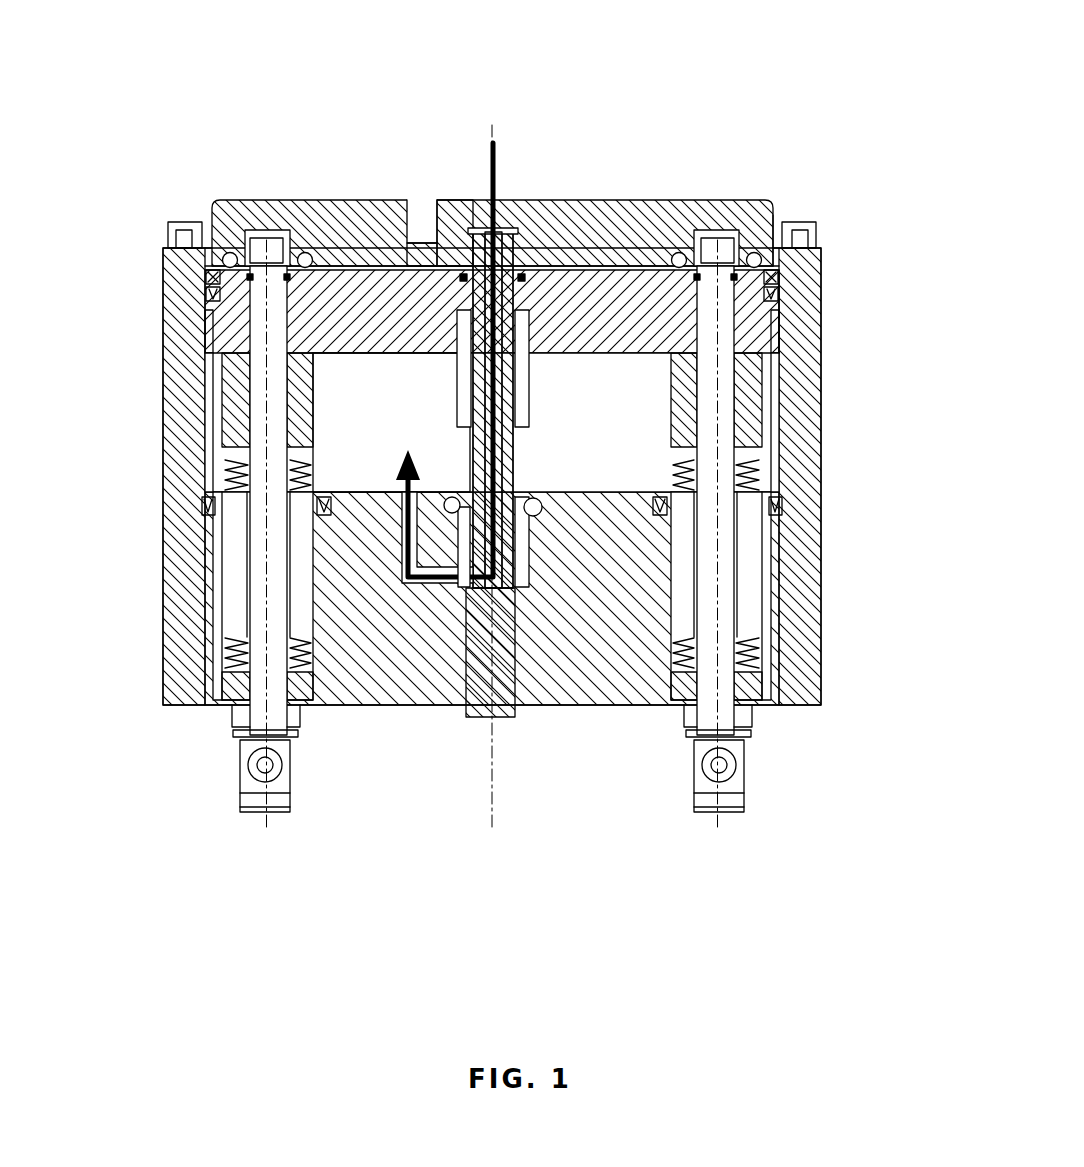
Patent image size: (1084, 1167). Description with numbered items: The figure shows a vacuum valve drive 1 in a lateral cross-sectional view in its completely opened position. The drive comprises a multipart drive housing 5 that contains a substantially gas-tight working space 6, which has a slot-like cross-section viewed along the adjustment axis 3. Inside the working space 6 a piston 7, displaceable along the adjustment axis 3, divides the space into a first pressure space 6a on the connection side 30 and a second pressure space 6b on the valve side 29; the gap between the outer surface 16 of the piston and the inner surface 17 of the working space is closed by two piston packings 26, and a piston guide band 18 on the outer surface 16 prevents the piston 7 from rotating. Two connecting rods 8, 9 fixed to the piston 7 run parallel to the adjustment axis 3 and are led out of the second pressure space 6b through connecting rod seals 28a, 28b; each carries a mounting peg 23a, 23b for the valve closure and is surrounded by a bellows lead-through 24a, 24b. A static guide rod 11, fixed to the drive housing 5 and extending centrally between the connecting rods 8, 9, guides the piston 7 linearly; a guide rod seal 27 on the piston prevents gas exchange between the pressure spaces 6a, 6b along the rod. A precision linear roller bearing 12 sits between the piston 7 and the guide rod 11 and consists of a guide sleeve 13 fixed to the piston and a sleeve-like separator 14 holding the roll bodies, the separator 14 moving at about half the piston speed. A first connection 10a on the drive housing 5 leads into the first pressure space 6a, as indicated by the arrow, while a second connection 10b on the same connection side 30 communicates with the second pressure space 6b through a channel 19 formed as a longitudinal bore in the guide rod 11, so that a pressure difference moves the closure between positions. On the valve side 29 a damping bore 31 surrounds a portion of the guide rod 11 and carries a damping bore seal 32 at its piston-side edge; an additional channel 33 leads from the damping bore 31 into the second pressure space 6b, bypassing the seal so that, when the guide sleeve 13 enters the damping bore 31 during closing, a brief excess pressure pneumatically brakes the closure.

The vacuum valve drive 1 is at (136, 117).
The adjustment axis 3 is at (490, 802).
The drive housing 5 is at (258, 212).
The working space 6 is at (337, 418).
The first pressure space 6a is at (770, 268).
The second pressure space 6b is at (350, 445).
The piston 7 is at (353, 307).
The connecting rod 8 is at (258, 452).
The connecting rod 9 is at (727, 452).
The first connection 10a is at (420, 212).
The second connection 10b is at (483, 212).
The guide rod 11 is at (505, 360).
The precision linear roller bearing 12 is at (548, 405).
The guide sleeve 13 is at (523, 385).
The separator 14 is at (515, 373).
The outer surface of the piston 16 is at (778, 343).
The inner surface of the working space 17 is at (782, 363).
The piston guide band 18 is at (790, 325).
The channel 19 is at (497, 438).
The mounting peg 23a is at (250, 787).
The mounting peg 23b is at (733, 787).
The bellows lead-through 24a is at (240, 478).
The bellows lead-through 24b is at (748, 478).
The piston packing 26 is at (772, 283).
The guide rod seal 27 is at (403, 205).
The connecting rod seal 28a is at (208, 513).
The connecting rod seal 28b is at (773, 515).
The valve side 29 is at (605, 750).
The connection side 30 is at (763, 175).
The damping bore 31 is at (518, 547).
The damping bore seal 32 is at (533, 507).
The additional channel 33 is at (405, 547).